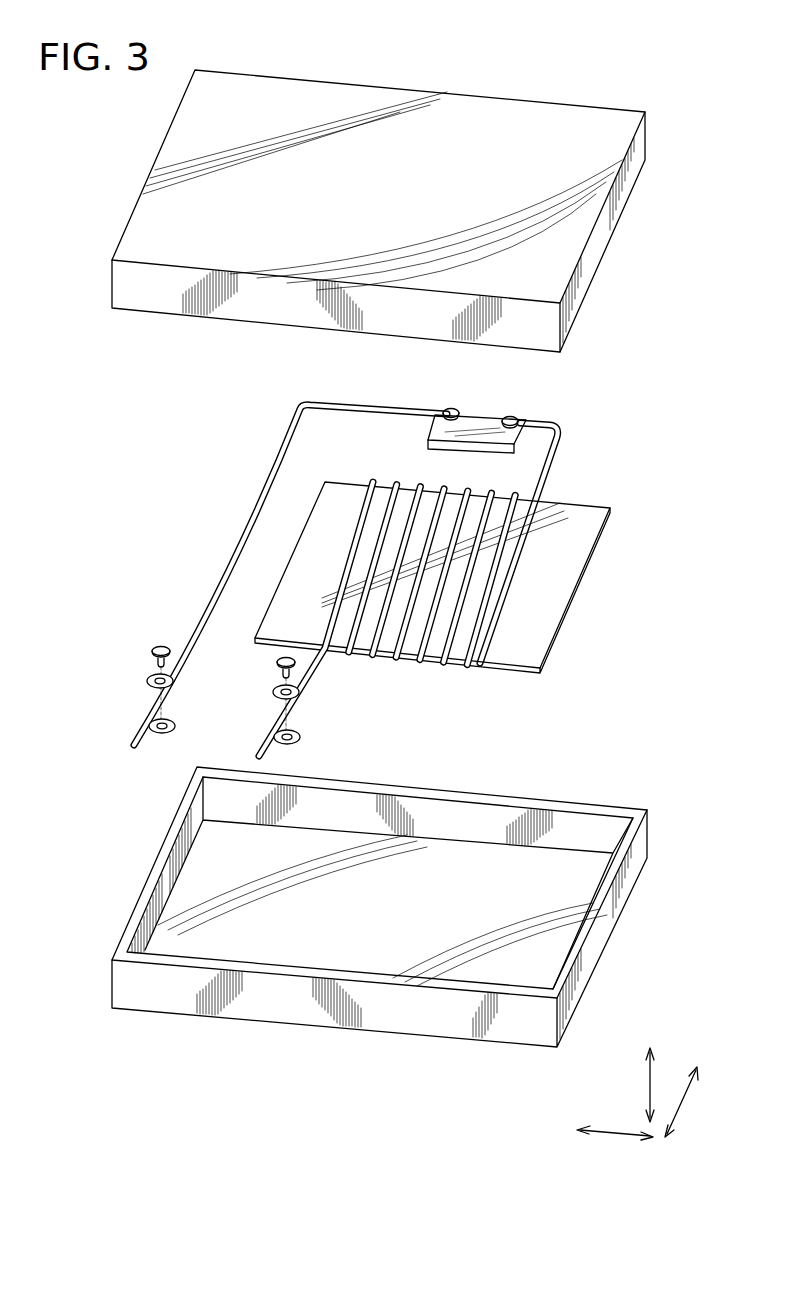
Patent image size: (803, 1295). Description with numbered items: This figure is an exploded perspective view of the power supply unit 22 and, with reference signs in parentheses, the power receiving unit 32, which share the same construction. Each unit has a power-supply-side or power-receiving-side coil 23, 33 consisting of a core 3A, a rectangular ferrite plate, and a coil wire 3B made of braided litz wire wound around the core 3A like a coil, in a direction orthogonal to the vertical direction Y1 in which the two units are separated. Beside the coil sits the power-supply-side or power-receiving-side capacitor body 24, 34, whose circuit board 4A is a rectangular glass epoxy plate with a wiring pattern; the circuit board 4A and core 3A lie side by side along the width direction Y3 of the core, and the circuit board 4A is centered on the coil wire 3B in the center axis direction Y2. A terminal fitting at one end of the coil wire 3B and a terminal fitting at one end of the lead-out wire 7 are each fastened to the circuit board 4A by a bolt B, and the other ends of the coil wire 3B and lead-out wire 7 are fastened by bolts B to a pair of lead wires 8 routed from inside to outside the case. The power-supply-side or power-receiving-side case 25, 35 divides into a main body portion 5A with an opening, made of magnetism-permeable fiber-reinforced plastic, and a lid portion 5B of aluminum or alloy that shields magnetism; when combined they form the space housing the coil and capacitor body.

The power supply unit 22 is at (386, 197).
The power receiving unit 32 is at (386, 211).
The lid portion 5B is at (620, 132).
The lead-out wire 7 is at (207, 615).
The power-supply-side coil 23 is at (485, 577).
The power-receiving-side coil 33 is at (453, 577).
The core 3A is at (562, 568).
The coil wire 3B is at (467, 638).
The power-supply-side capacitor body 24 is at (454, 410).
The power-receiving-side capacitor body 34 is at (446, 434).
The circuit board 4A is at (432, 430).
The bolt B is at (445, 410).
The lead wire 8 is at (133, 731).
The power-supply-side case 25 is at (341, 937).
The power-receiving-side case 35 is at (379, 937).
The main body portion 5A is at (527, 1023).
The vertical direction Y1 is at (647, 1077).
The center axis direction Y2 is at (613, 1137).
The width direction Y3 is at (688, 1092).